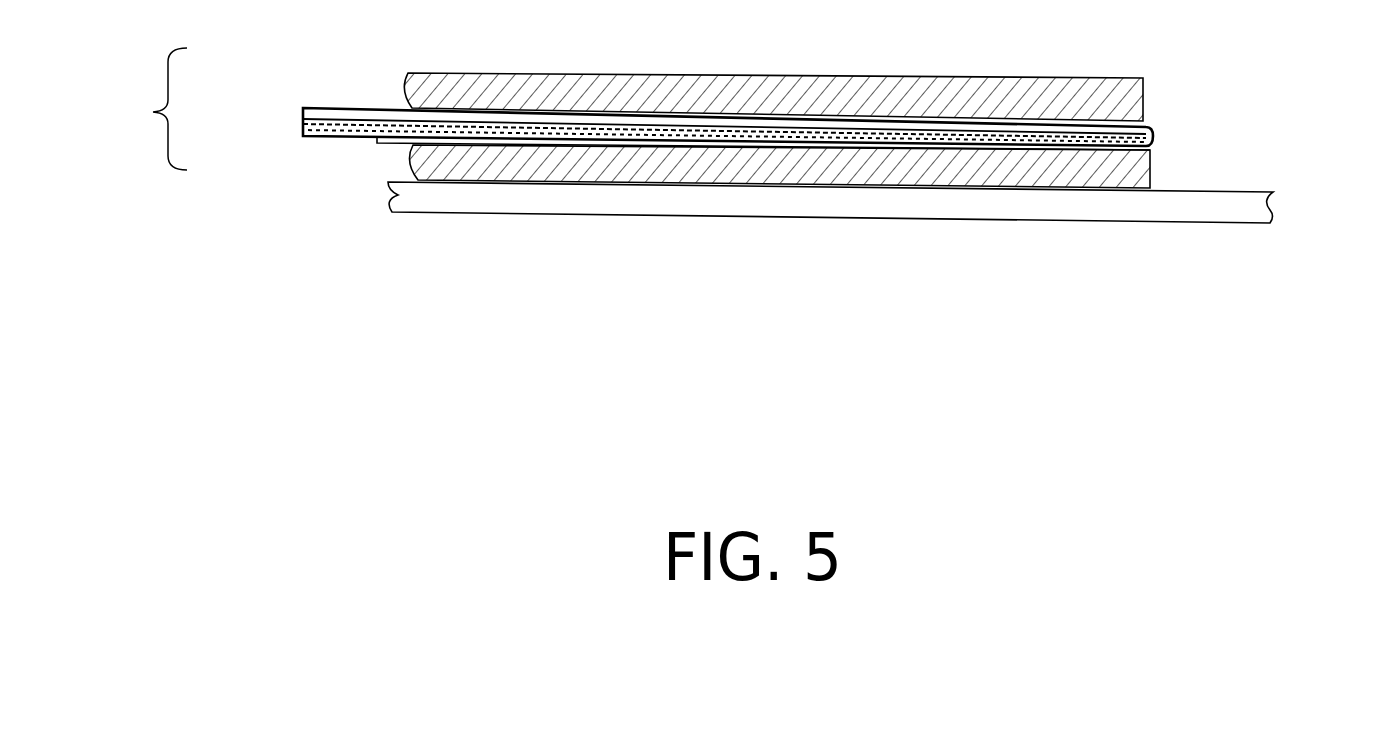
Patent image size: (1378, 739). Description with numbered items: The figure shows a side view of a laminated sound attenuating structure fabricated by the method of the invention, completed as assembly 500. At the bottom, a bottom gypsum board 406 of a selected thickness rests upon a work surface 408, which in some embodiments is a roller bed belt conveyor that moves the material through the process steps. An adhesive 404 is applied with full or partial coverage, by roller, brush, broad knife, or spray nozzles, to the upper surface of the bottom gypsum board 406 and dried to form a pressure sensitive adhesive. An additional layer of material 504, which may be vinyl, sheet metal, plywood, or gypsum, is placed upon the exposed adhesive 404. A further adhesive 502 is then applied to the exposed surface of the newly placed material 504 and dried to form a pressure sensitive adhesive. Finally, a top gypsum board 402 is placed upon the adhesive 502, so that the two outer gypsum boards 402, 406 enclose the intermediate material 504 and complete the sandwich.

The assembly 500 is at (136, 109).
The adhesive 502 is at (310, 100).
The additional layer of material 504 is at (319, 144).
The top gypsum board 402 is at (1097, 72).
The adhesive 404 is at (1160, 148).
The bottom gypsum board 406 is at (1160, 173).
The work surface 408 is at (1064, 232).